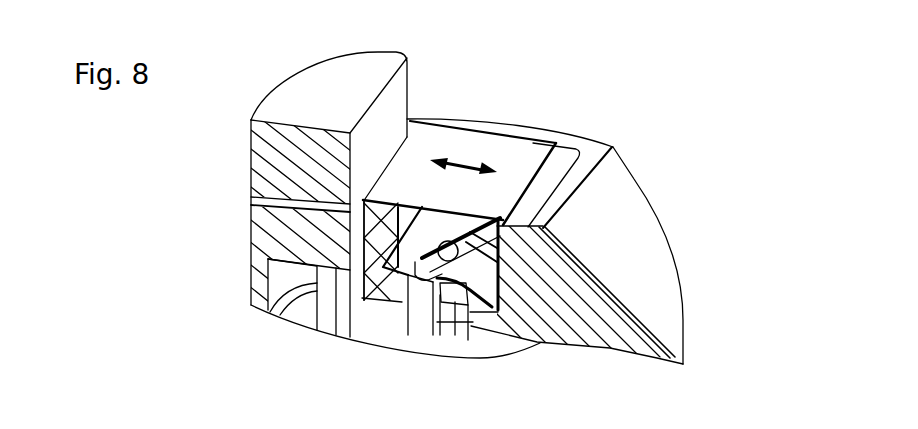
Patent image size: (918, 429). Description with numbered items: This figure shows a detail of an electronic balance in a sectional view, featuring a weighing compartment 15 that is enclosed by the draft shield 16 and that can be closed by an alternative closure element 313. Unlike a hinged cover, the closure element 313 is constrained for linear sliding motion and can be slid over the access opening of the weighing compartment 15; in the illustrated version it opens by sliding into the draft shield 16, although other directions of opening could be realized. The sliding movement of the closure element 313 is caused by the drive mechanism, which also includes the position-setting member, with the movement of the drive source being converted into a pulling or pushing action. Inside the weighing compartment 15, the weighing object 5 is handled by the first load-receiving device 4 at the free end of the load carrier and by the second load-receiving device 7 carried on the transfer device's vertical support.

The draft shield 16 is at (625, 240).
The closure element 313 is at (457, 142).
The weighing object 5 is at (480, 205).
The weighing compartment 15 is at (393, 225).
The second load-receiving device 7 is at (398, 270).
The first load-receiving device 4 is at (477, 323).